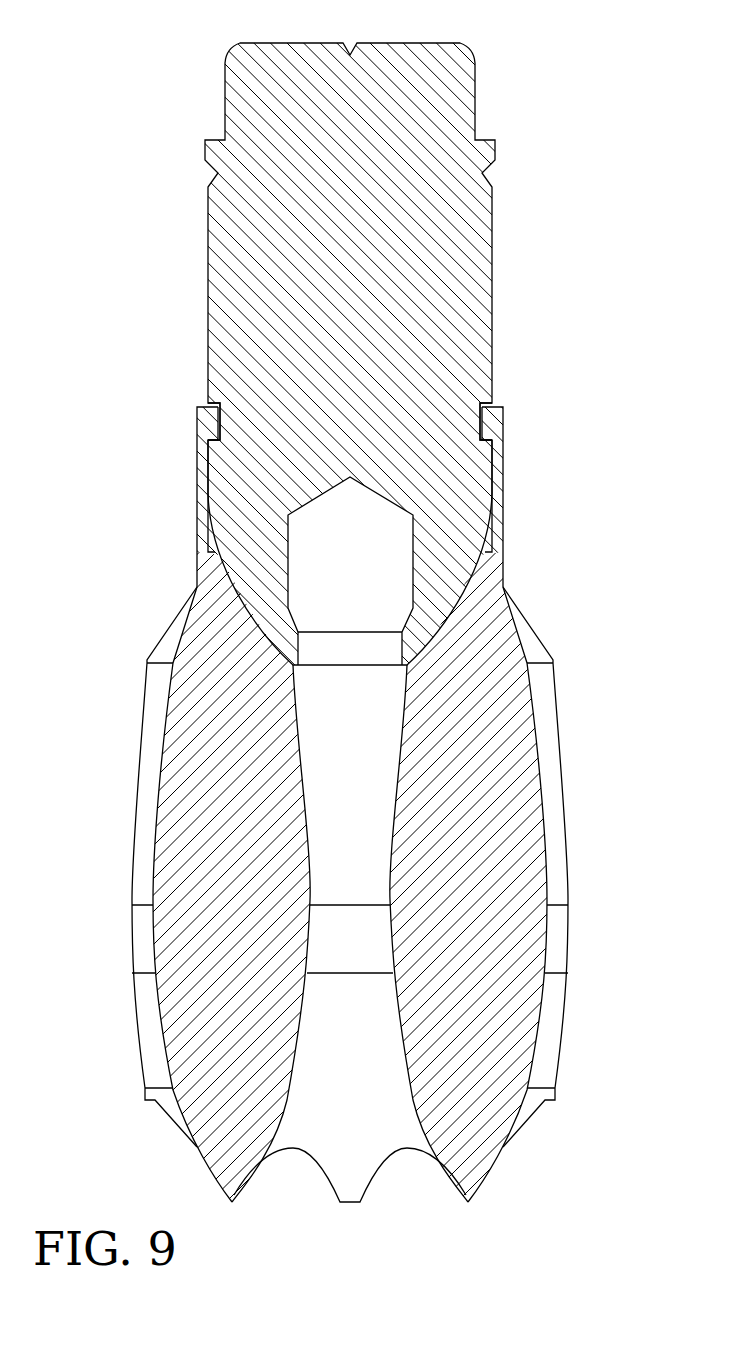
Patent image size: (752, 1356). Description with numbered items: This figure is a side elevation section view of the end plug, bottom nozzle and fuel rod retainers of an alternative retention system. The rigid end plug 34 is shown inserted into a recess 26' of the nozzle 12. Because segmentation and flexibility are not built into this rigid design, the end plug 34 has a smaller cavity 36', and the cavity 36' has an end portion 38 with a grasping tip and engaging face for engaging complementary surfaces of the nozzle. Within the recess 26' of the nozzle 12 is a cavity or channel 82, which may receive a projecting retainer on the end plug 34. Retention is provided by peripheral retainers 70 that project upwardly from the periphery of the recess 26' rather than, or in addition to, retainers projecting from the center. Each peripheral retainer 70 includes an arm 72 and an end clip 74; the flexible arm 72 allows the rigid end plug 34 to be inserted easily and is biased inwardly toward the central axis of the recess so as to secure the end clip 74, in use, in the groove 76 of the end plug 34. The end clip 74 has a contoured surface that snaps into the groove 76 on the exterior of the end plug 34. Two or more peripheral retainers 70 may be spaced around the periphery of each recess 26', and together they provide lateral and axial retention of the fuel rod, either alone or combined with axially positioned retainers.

The nozzle 12 is at (517, 885).
The recess 26' is at (376, 877).
The end plug 34 is at (443, 248).
The cavity 36' is at (433, 571).
The end portion 38 is at (271, 613).
The peripheral retainer 70 is at (208, 540).
The arm 72 is at (197, 468).
The end clip 74 is at (205, 420).
The groove 76 is at (220, 406).
The channel 82 is at (370, 752).